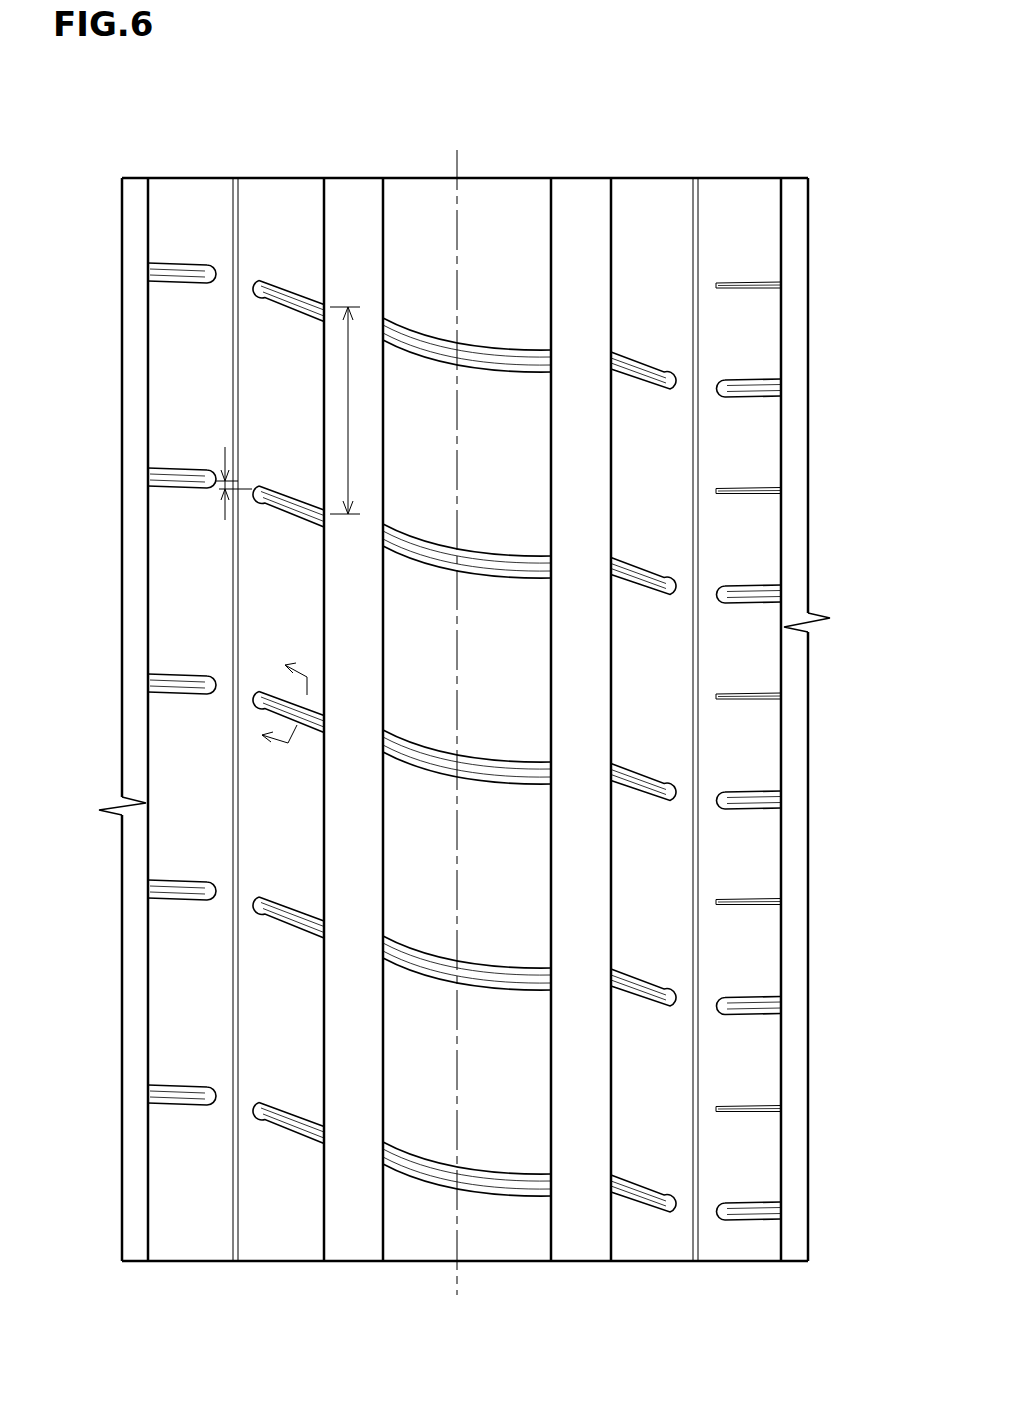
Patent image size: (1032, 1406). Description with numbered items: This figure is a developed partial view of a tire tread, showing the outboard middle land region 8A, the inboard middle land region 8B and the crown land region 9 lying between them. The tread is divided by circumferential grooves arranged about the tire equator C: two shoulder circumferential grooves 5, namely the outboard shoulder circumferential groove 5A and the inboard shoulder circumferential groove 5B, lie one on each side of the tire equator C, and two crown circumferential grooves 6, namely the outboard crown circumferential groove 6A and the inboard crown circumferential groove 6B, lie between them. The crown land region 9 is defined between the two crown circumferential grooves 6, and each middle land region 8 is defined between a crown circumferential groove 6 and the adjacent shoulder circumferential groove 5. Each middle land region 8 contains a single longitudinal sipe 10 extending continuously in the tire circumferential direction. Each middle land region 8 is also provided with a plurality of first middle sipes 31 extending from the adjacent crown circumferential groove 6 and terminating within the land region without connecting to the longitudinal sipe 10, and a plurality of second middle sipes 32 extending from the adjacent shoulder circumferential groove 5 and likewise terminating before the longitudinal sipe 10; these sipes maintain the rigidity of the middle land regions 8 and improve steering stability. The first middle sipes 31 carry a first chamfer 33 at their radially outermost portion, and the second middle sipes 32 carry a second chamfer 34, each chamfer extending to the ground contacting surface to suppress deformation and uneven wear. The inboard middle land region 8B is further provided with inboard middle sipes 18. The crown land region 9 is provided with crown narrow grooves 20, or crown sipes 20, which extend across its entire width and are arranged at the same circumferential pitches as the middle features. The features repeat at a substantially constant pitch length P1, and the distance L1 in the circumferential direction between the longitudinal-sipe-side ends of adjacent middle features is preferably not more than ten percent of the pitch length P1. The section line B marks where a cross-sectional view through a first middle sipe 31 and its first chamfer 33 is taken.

The shoulder circumferential groove 5 is at (123, 246).
The outboard shoulder circumferential groove 5A is at (137, 212).
The inboard shoulder circumferential groove 5B is at (793, 212).
The crown circumferential groove 6 is at (372, 227).
The outboard crown circumferential groove 6A is at (350, 215).
The inboard crown circumferential groove 6B is at (586, 212).
The middle land region 8 is at (194, 212).
The outboard middle land region 8A is at (281, 215).
The inboard middle land region 8B is at (729, 215).
The crown land region 9 is at (484, 215).
The longitudinal sipe 10 is at (233, 765).
The inboard middle sipe 18 is at (748, 697).
The crown narrow groove 20 is at (412, 1157).
The first middle sipe 31 is at (285, 300).
The second middle sipe 32 is at (180, 272).
The first chamfer 33 is at (268, 1118).
The second chamfer 34 is at (190, 1103).
The tire equator C is at (457, 707).
The pitch length P1 is at (348, 410).
The distance L1 is at (222, 486).
The line B- B is at (280, 705).